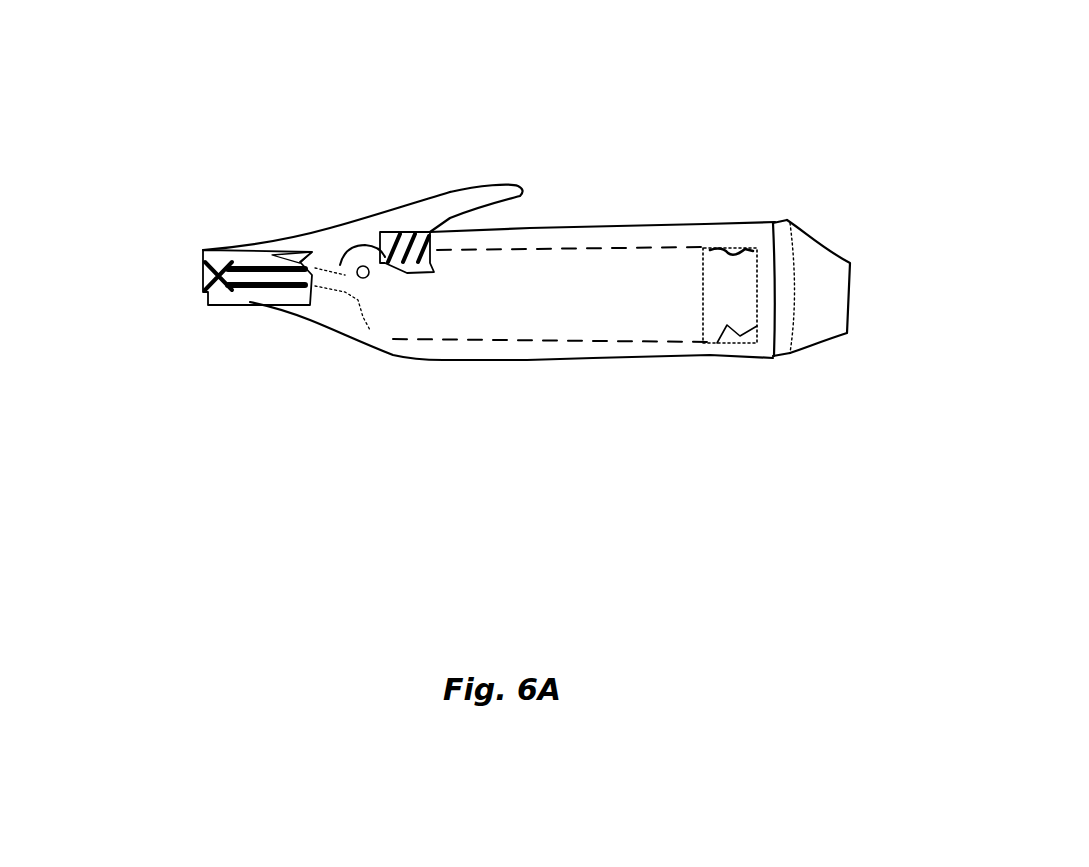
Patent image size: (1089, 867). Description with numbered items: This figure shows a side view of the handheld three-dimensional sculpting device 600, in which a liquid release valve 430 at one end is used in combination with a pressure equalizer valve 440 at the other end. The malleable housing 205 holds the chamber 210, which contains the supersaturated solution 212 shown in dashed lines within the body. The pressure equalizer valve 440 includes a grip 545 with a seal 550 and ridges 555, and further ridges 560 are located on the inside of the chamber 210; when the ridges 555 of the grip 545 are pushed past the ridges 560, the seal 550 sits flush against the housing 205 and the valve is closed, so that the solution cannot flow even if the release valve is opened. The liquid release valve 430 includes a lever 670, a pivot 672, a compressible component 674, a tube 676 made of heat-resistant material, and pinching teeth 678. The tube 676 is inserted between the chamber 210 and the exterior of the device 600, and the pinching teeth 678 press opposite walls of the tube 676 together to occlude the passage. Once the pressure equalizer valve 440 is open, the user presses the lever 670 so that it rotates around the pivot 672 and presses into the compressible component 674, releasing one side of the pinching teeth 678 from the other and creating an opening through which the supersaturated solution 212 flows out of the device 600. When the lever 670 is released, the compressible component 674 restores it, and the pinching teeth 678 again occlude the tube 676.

The liquid release valve 430 is at (200, 130).
The pressure equalizer valve 440 is at (705, 380).
The malleable housing 205 is at (588, 367).
The chamber 210 is at (486, 335).
The supersaturated solution 212 is at (435, 313).
The lever 670 is at (480, 205).
The compressible component 674 is at (384, 232).
The pivot 672 is at (350, 258).
The tube 676 is at (253, 297).
The pinching teeth 678 is at (208, 262).
The ridges 555 is at (708, 247).
The ridges 560 is at (730, 253).
The seal 550 is at (777, 233).
The grip 545 is at (833, 280).
The 3D device 600 is at (920, 634).